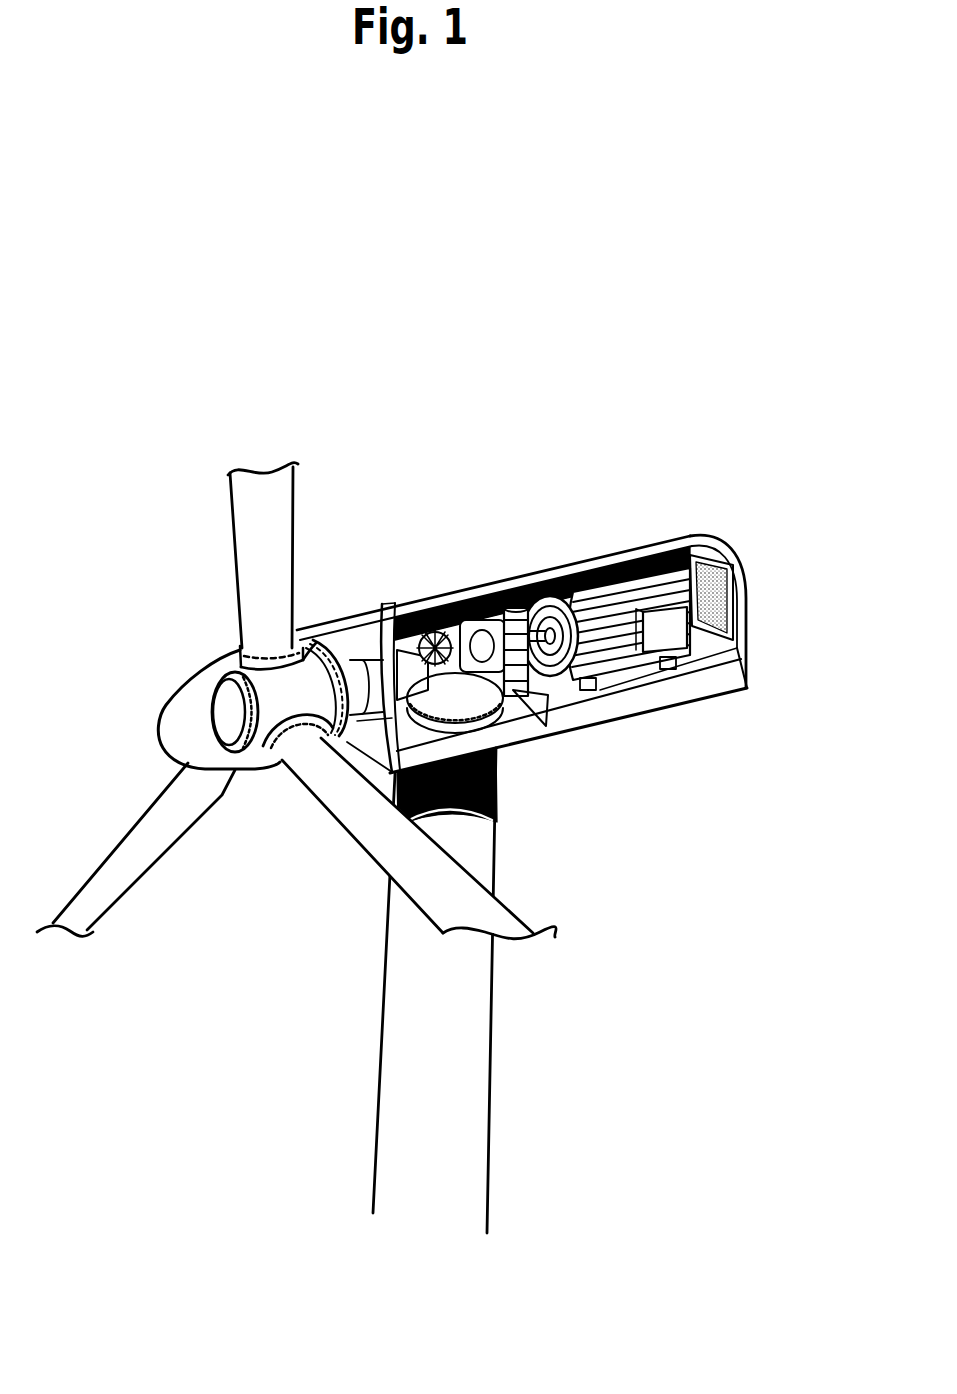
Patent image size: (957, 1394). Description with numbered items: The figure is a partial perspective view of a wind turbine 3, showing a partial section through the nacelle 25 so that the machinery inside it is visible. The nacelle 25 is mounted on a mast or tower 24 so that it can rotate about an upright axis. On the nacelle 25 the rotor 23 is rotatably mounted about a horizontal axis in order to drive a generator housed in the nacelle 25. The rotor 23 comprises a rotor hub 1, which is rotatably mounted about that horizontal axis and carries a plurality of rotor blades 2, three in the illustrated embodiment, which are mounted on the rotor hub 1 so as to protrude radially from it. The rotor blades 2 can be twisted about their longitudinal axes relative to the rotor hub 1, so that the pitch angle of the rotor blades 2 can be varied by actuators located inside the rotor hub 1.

The rotor hub 1 is at (228, 718).
The rotor blades 2 is at (322, 787).
The wind turbine 3 is at (500, 489).
The rotor 23 is at (239, 808).
The tower 24 is at (382, 1067).
The nacelle 25 is at (660, 708).